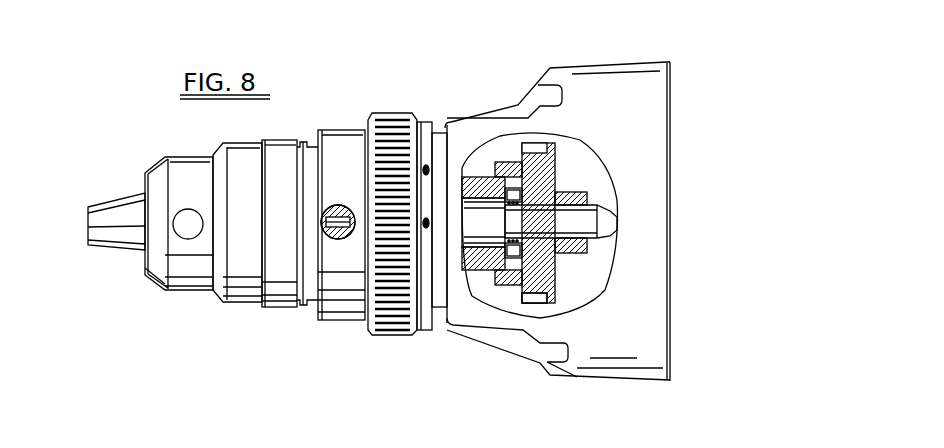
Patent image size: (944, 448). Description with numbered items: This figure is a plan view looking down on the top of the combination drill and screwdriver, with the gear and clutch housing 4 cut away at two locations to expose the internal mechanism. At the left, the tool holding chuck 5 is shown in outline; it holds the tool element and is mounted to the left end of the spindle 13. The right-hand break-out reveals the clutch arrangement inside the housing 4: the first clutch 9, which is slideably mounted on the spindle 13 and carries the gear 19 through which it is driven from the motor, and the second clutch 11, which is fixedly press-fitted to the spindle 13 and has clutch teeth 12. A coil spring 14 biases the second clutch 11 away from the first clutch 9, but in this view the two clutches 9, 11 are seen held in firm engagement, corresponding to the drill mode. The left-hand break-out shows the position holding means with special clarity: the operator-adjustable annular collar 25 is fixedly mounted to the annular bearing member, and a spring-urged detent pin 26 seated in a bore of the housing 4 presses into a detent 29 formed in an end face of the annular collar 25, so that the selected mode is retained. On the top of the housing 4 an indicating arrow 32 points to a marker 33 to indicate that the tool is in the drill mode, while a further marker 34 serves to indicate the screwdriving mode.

The gear and clutch housing 4 is at (612, 62).
The tool holding chuck 5 is at (158, 283).
The first clutch 9 is at (560, 310).
The second clutch 11 is at (504, 274).
The clutch teeth 12 is at (520, 176).
The spindle 13 is at (478, 224).
The coil spring 14 is at (525, 195).
The gear 19 is at (536, 302).
The annular collar 25 is at (390, 113).
The detent pin 26 is at (350, 243).
The detent 29 is at (343, 206).
The indicating arrow 32 is at (431, 168).
The marker 33 is at (428, 228).
The marker 34 is at (447, 212).